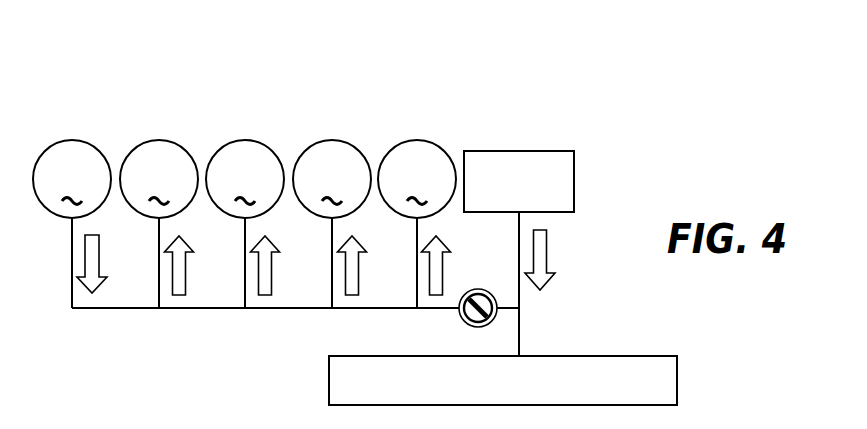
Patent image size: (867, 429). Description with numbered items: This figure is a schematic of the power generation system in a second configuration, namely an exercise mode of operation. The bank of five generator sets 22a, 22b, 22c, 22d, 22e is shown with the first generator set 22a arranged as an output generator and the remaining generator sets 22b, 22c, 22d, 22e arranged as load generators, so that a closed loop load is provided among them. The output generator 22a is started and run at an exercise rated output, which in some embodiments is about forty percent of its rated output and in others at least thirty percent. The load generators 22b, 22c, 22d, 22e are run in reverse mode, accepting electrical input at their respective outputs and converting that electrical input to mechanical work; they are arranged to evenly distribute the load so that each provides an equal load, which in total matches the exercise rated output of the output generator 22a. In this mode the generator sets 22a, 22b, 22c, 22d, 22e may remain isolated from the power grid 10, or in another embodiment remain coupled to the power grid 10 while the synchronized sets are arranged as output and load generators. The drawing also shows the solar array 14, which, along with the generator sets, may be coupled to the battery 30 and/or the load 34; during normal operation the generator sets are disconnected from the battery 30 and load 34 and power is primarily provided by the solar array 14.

The first generator set 22a is at (72, 67).
The generator set 22b is at (159, 67).
The generator set 22c is at (245, 67).
The generator set 22d is at (332, 67).
The generator set 22e is at (417, 67).
The solar array 14 is at (542, 151).
The power grid 10 is at (130, 330).
The battery 30 is at (542, 365).
The load 34 is at (677, 382).